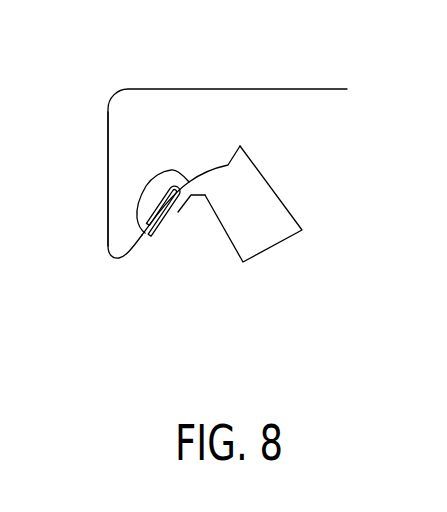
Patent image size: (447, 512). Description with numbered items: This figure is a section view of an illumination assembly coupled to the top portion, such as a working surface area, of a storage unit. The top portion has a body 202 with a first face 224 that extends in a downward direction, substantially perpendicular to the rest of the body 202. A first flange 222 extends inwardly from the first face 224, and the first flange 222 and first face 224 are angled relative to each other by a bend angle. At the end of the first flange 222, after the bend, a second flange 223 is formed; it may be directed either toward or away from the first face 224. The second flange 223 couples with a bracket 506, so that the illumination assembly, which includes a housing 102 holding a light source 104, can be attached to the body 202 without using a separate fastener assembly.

The housing 102 is at (273, 246).
The light source 104 is at (230, 240).
The body 202 is at (250, 88).
The first flange 222 is at (141, 235).
The second flange 223 is at (203, 172).
The first face 224 is at (106, 157).
The bracket 506 is at (143, 184).